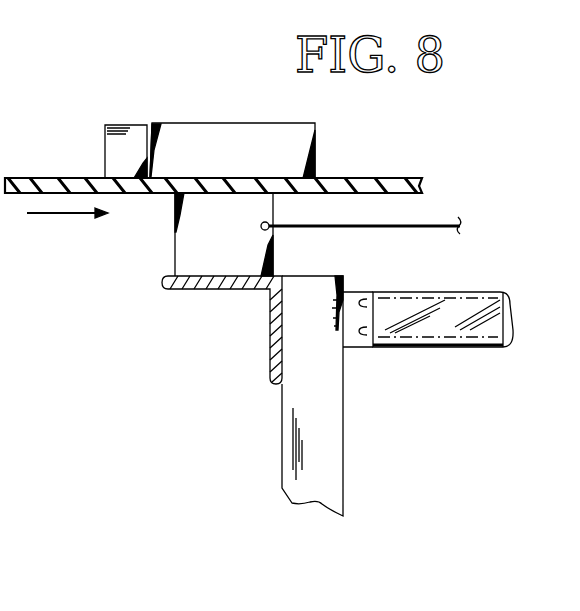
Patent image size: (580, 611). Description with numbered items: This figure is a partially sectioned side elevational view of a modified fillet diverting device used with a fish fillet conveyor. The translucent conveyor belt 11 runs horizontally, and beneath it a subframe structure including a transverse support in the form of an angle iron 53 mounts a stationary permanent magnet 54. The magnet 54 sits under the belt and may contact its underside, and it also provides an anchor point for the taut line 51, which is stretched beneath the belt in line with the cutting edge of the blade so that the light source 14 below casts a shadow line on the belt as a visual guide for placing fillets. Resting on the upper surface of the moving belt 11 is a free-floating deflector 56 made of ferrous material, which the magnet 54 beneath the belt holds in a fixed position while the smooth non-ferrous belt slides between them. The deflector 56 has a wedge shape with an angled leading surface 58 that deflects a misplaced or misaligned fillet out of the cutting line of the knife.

The conveyor belt 11 is at (365, 180).
The light source 14 is at (447, 294).
The taut line 51 is at (408, 230).
The angle iron 53 is at (220, 290).
The permanent magnet 54 is at (187, 255).
The deflector 56 is at (205, 130).
The angled leading surface 58 is at (128, 140).